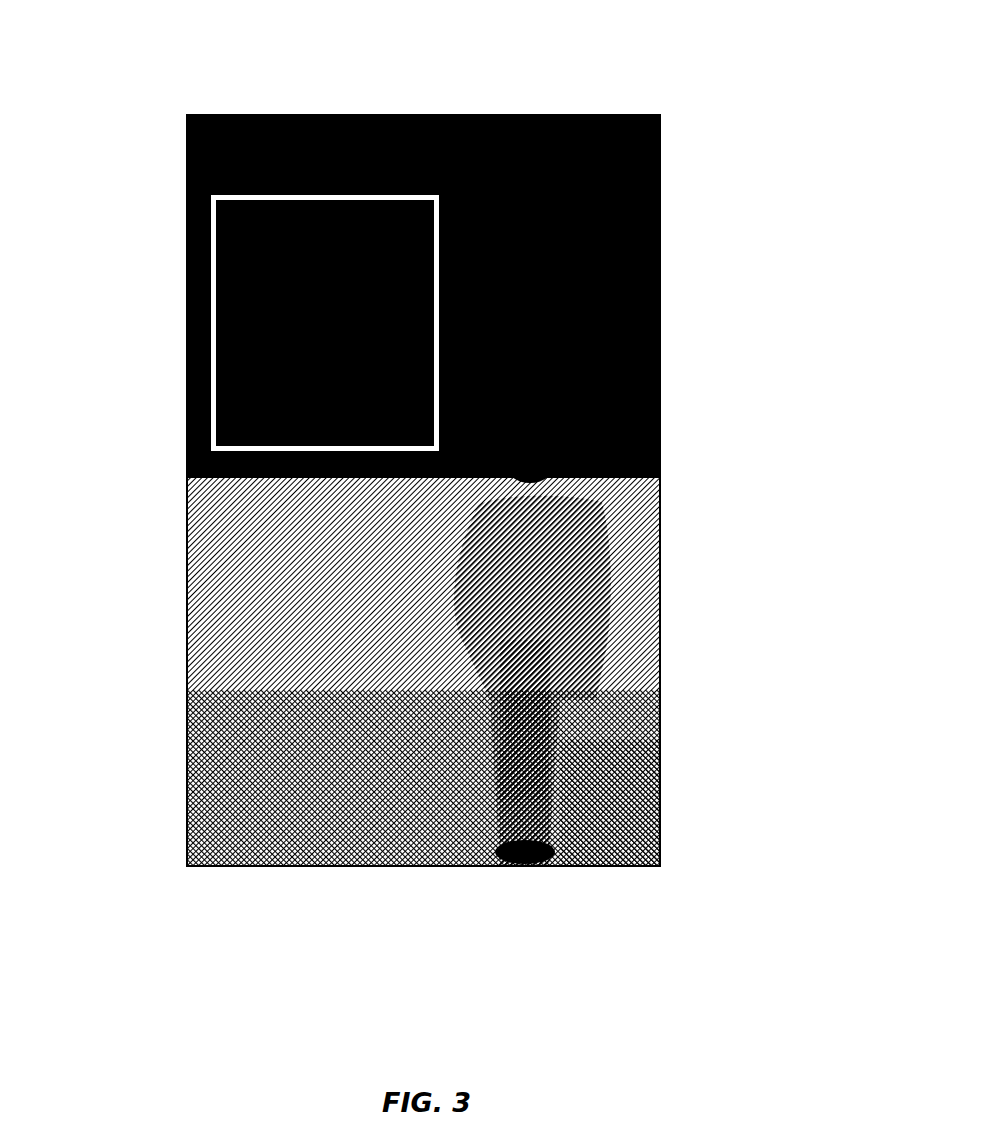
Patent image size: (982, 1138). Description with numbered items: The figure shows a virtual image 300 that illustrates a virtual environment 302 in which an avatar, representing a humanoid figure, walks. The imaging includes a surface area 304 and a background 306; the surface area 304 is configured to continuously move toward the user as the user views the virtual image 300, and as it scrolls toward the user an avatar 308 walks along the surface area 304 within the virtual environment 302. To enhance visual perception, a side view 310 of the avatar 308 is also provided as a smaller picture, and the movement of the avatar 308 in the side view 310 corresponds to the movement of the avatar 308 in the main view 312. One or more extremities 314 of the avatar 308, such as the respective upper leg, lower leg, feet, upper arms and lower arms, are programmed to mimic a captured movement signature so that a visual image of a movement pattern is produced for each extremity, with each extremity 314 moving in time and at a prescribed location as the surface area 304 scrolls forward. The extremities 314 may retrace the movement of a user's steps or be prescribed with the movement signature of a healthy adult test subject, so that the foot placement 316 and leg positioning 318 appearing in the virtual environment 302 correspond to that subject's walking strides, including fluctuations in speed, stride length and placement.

The virtual image 300 is at (452, 82).
The virtual environment 302 is at (237, 630).
The surface area 304 is at (217, 767).
The background 306 is at (660, 235).
The avatar 308 is at (312, 283).
The side view 310 is at (247, 425).
The main view 312 is at (640, 782).
The extremities 314 is at (553, 723).
The foot placement 316 is at (533, 847).
The leg positioning 318 is at (498, 764).